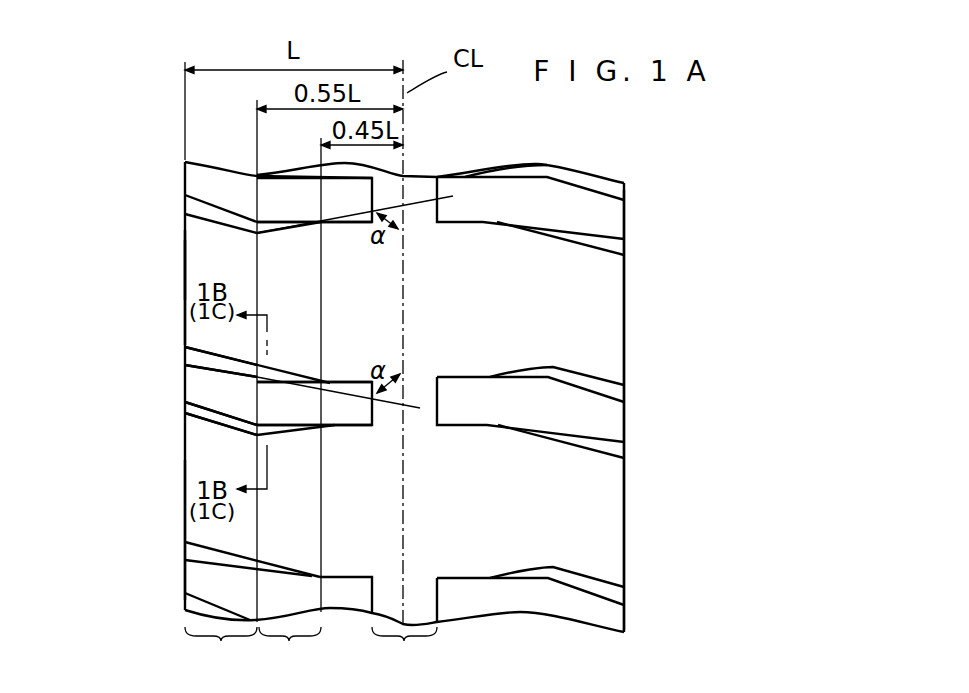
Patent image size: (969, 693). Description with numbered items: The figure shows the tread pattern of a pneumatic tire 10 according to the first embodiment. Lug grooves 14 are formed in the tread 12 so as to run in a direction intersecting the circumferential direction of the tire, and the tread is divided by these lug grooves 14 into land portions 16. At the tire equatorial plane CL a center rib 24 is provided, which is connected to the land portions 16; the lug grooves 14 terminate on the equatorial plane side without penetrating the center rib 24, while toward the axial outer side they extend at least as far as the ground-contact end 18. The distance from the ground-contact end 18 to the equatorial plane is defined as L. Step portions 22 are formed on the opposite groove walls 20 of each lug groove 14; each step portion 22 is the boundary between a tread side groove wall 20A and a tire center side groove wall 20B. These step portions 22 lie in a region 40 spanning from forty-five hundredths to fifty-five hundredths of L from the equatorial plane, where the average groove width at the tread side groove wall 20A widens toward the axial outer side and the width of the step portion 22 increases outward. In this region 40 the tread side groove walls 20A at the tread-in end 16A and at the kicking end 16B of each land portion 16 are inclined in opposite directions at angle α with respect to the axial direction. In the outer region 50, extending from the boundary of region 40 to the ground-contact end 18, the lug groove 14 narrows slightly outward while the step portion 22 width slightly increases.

The pneumatic tire 10 is at (116, 113).
The tread 12 is at (170, 254).
The lug grooves 14 is at (185, 383).
The land portions 16 is at (195, 266).
The tread-in end 16A is at (290, 224).
The kicking end 16B is at (282, 371).
The ground-contact end 18 is at (183, 478).
The groove walls 20 is at (345, 415).
The tread side groove walls 20A is at (226, 360).
The tire center side groove walls 20B is at (220, 372).
The step portions 22 is at (193, 358).
The center rib 24 is at (404, 648).
The region 40 is at (290, 648).
The region 50 is at (221, 648).